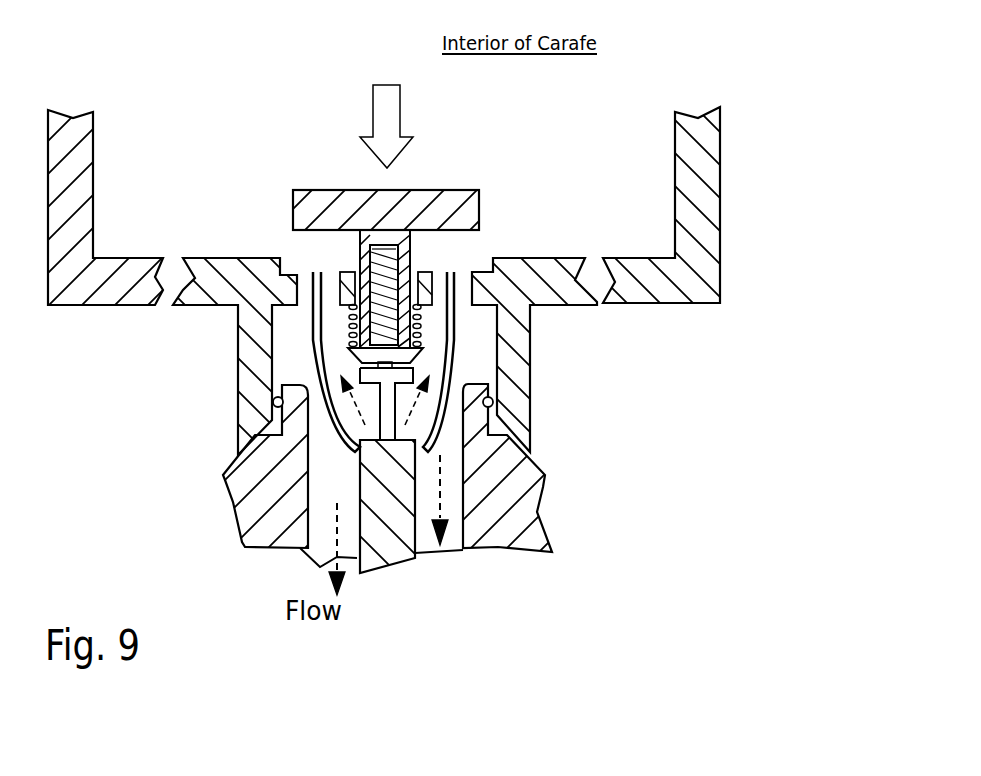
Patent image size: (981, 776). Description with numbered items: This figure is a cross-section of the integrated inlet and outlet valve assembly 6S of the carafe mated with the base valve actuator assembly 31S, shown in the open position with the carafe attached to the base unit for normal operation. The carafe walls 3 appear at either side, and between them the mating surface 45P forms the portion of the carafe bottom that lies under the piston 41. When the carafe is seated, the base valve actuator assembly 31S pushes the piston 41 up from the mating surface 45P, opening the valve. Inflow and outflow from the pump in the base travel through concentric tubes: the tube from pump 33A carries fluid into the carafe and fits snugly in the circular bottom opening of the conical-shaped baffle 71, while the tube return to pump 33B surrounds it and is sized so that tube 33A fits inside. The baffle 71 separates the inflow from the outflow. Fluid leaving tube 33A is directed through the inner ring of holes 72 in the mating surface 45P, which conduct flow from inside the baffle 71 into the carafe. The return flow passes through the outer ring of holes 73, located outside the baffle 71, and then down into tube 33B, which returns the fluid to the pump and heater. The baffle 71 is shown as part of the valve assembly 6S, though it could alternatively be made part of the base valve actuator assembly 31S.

The carafe wall 3 is at (85, 150).
The integrated inlet and outlet valve assembly 6S is at (307, 177).
The piston 41 is at (463, 190).
The mating surface 45P is at (288, 272).
The inner ring of holes 72 is at (322, 272).
The outer ring of holes 73 is at (463, 278).
The conical-shaped baffle 71 is at (441, 290).
The base valve actuator assembly 31S is at (215, 497).
The tube from pump 33A is at (388, 563).
The tube return to pump 33B is at (450, 542).